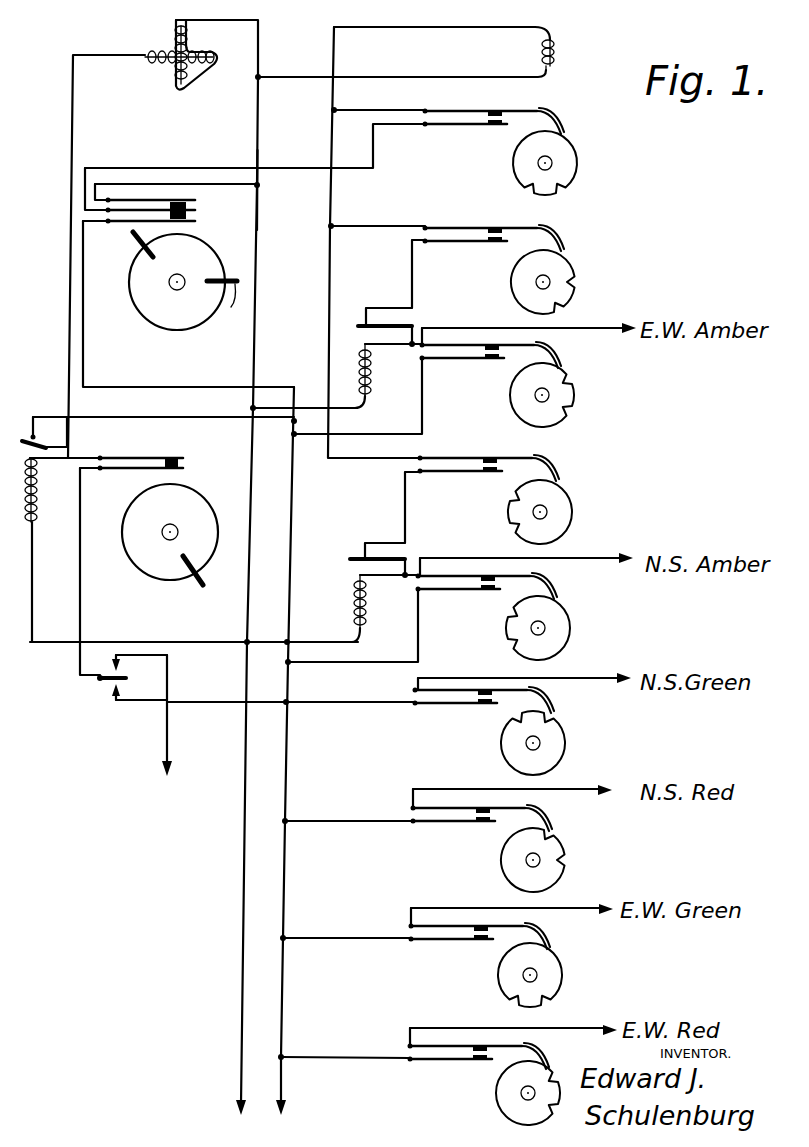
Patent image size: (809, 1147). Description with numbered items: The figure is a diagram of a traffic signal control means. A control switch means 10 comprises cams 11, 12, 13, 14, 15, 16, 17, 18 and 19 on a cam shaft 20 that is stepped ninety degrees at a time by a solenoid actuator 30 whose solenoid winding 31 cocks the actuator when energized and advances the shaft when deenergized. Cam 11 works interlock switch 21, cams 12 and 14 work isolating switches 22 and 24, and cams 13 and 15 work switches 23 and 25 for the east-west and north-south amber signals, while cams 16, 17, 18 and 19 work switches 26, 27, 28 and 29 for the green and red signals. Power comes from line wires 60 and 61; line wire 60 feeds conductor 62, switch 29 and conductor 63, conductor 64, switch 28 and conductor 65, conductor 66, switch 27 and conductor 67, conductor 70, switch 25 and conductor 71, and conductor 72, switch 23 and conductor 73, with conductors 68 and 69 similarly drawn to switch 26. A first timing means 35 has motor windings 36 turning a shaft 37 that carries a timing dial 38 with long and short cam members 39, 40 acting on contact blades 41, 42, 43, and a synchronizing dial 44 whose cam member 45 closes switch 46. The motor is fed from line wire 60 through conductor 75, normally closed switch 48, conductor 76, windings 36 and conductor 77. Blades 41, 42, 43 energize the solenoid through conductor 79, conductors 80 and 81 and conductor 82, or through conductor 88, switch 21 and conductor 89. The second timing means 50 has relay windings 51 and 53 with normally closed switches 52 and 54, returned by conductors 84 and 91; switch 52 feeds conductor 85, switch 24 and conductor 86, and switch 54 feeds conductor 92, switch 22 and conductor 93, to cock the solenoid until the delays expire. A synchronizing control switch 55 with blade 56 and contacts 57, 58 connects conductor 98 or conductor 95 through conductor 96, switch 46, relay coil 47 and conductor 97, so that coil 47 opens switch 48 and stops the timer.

The control switch means 10 is at (628, 134).
The cam 11 is at (580, 174).
The cam 12 is at (576, 277).
The cam 13 is at (568, 396).
The cam 14 is at (572, 513).
The cam 15 is at (572, 622).
The cam 16 is at (558, 745).
The cam 17 is at (565, 855).
The cam 18 is at (552, 975).
The cam 19 is at (514, 1116).
The cam shaft 20 is at (538, 166).
The interlock switch 21 is at (494, 112).
The isolating switch 22 is at (505, 228).
The switch 23 is at (508, 345).
The isolating switch 24 is at (498, 458).
The switch 25 is at (505, 576).
The switch 26 is at (505, 690).
The switch 27 is at (505, 808).
The switch 28 is at (505, 926).
The switch 29 is at (505, 1046).
The solenoid actuator 30 is at (562, 58).
The solenoid winding 31 is at (542, 58).
The first timing means 35 is at (135, 46).
The motor windings 36 is at (200, 52).
The shaft 37 is at (172, 286).
The timing dial 38 is at (205, 256).
The cam member 39 is at (130, 236).
The cam member 40 is at (226, 305).
The contact blade 41 is at (197, 224).
The contact blade 42 is at (197, 212).
The contact blade 43 is at (196, 200).
The synchronizing dial 44 is at (192, 504).
The cam member 45 is at (200, 587).
The synchronizing switch 46 is at (183, 458).
The relay coil 47 is at (38, 492).
The normally closed switch 48 is at (30, 425).
The second timing means 50 is at (358, 312).
The relay winding 51 is at (366, 612).
The normally closed switch 52 is at (352, 557).
The relay winding 53 is at (372, 378).
The normally closed switch 54 is at (360, 328).
The synchronizing control switch 55 is at (80, 700).
The switch blade 56 is at (100, 681).
The contact 57 is at (122, 667).
The contact 58 is at (122, 690).
The line wire 60 is at (284, 1084).
The line wire 61 is at (238, 1083).
The conductor 62 is at (349, 1056).
The conductor 63 is at (468, 1026).
The conductor 64 is at (354, 937).
The conductor 65 is at (463, 907).
The conductor 66 is at (354, 820).
The conductor 67 is at (451, 788).
The conductor 68 is at (353, 705).
The conductor 69 is at (476, 676).
The conductor 70 is at (420, 632).
The conductor 71 is at (478, 556).
The conductor 72 is at (424, 400).
The conductor 73 is at (475, 326).
The conductor 75 is at (159, 417).
The conductor 76 is at (71, 140).
The conductor 77 is at (262, 56).
The conductor 79 is at (170, 386).
The conductor 80 is at (284, 197).
The conductor 81 is at (462, 30).
The conductor 82 is at (452, 78).
The conductor 84 is at (324, 644).
The conductor 85 is at (407, 520).
The conductor 86 is at (329, 316).
The conductor 88 is at (197, 166).
The conductor 89 is at (366, 110).
The conductor 91 is at (355, 412).
The conductor 92 is at (413, 280).
The conductor 93 is at (390, 226).
The conductor 95 is at (203, 700).
The conductor 96 is at (82, 600).
The conductor 97 is at (33, 612).
The conductor 98 is at (169, 736).